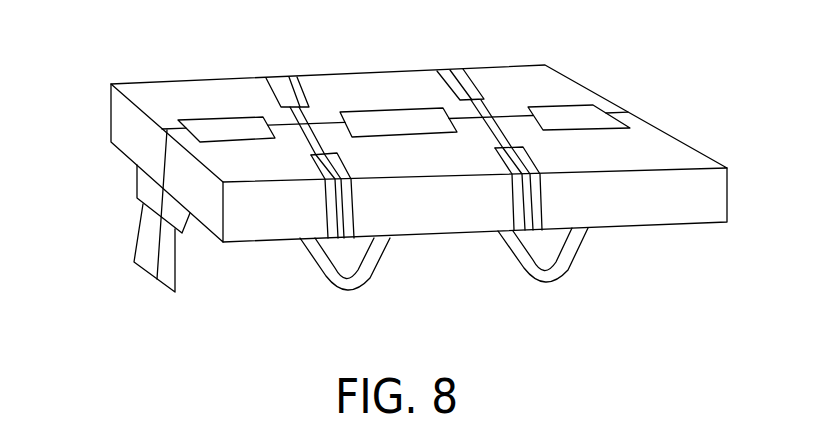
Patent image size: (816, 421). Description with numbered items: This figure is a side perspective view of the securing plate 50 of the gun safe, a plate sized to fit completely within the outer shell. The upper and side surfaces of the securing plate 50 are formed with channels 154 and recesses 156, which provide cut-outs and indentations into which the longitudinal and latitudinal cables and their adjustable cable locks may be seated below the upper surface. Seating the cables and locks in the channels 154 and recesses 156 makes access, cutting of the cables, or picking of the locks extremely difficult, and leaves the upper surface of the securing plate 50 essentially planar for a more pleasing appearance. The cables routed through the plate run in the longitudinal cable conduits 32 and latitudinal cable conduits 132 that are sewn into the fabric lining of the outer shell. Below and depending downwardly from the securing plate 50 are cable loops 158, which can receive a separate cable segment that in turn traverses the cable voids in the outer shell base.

The securing plate 50 is at (120, 82).
The longitudinal cable conduits 32 is at (629, 113).
The channels 154 is at (274, 79).
The recesses 156 is at (205, 119).
The latitudinal cable conduits 132 is at (344, 232).
The cable loops 158 is at (312, 266).